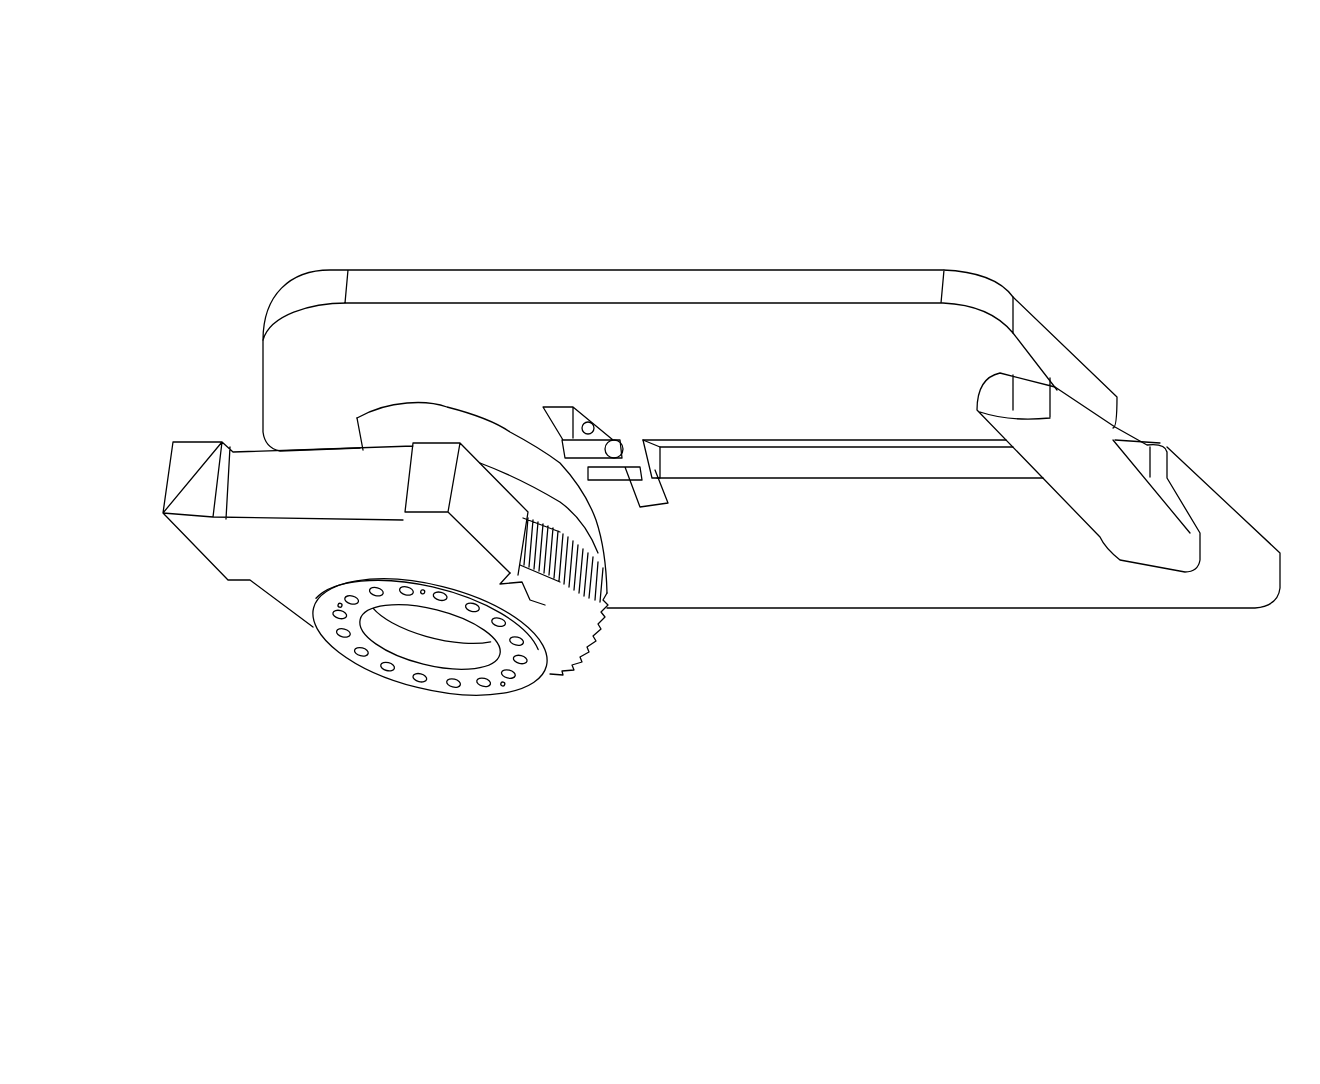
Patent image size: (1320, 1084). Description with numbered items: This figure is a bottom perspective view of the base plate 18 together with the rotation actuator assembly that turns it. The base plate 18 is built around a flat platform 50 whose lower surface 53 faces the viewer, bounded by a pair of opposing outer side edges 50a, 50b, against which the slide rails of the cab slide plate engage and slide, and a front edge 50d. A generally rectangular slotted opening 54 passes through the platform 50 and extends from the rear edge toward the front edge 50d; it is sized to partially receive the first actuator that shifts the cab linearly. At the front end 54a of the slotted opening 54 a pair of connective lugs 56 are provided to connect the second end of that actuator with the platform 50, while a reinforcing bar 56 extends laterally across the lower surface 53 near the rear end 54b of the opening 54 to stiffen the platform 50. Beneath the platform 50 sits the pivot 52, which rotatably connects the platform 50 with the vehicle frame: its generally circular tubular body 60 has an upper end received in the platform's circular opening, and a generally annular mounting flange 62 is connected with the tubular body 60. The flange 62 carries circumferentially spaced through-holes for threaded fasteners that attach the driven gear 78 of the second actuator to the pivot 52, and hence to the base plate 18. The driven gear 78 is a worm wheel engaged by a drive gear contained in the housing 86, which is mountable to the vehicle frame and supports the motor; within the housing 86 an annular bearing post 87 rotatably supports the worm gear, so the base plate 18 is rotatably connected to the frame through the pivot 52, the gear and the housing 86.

The base plate 18 is at (503, 238).
The platform 50 is at (638, 248).
The outer side edge 50a is at (780, 288).
The outer side edge 50b is at (848, 608).
The front edge 50d is at (1057, 357).
The pivot 52 is at (356, 421).
The lower surface 53 is at (816, 374).
The slotted opening 54 is at (822, 460).
The front end of slotted opening 54a is at (645, 500).
The rear end of slotted opening 54b is at (1140, 450).
The connective lugs 56 is at (610, 440).
The tubular body 60 is at (473, 428).
The mounting flange 62 is at (590, 553).
The driven gear 78 is at (610, 632).
The housing 86 is at (193, 533).
The annular bearing post 87 is at (380, 623).